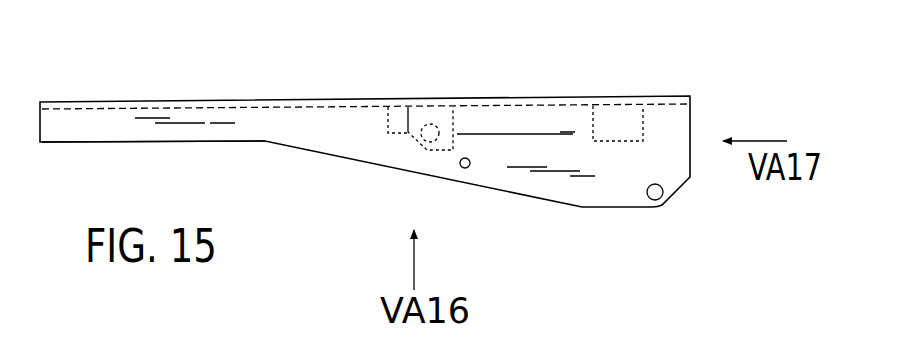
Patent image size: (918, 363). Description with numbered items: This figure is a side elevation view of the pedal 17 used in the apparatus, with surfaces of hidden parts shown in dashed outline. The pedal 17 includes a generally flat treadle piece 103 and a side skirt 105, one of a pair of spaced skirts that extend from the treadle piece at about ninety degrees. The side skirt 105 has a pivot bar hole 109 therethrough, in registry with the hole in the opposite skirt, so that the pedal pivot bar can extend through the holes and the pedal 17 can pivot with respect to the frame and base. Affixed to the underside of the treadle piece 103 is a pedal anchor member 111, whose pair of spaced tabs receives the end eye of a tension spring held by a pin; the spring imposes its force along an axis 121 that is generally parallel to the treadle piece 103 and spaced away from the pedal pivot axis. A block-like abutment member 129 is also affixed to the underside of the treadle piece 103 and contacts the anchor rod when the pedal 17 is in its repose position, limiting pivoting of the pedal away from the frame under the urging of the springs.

The pedal 17 is at (212, 73).
The treadle piece 103 is at (275, 100).
The side skirt 105 is at (213, 142).
The pedal anchor member 111 is at (423, 147).
The axis 121 is at (495, 132).
The abutment member 129 is at (643, 130).
The pivot bar hole 109 is at (652, 200).